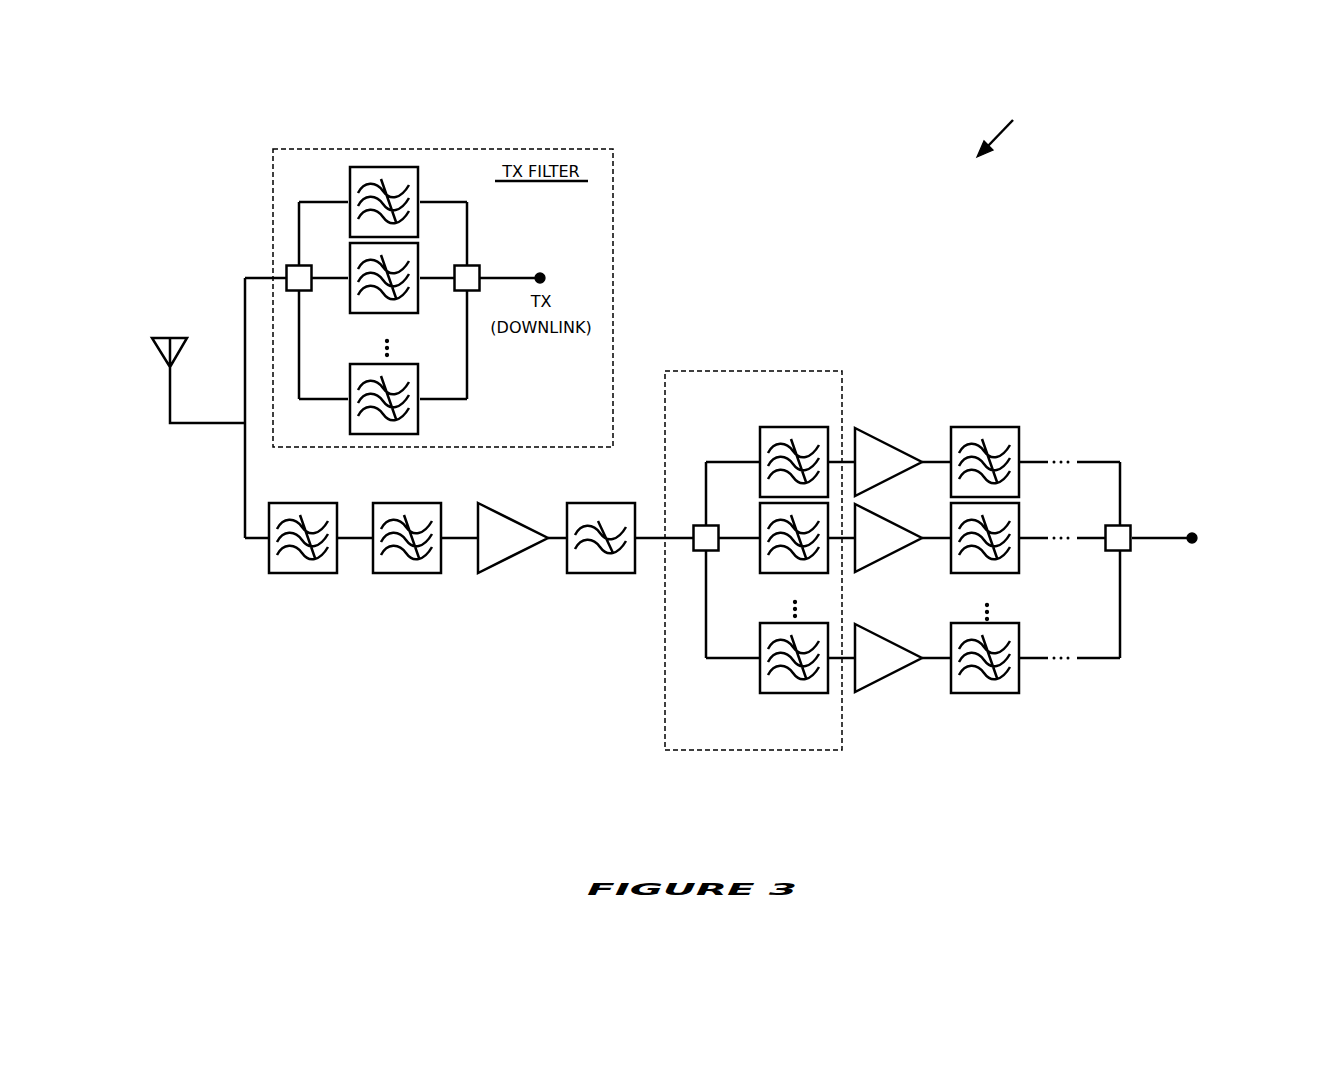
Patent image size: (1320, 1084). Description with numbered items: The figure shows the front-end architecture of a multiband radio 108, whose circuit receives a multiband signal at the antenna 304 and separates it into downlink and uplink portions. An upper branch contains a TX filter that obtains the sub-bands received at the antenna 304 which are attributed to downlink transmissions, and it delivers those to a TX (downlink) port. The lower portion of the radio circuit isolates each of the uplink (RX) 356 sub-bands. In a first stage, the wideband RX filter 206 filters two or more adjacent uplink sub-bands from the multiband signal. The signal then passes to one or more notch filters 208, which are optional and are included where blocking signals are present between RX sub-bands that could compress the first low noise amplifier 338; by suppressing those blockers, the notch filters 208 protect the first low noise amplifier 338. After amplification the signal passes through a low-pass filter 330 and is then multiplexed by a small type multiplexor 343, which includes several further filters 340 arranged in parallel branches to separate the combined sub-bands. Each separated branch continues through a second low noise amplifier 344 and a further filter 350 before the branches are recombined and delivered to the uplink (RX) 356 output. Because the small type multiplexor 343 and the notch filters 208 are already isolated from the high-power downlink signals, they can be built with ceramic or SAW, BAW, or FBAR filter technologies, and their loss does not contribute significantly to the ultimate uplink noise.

The multiband radio 108 is at (1009, 129).
The antenna 304 is at (107, 389).
The wideband RX filter 206 is at (303, 550).
The notch filter 208 is at (407, 550).
The first low noise amplifier (LNA 1) 338 is at (513, 525).
The low-pass filter 330 is at (601, 537).
The filter 340 is at (794, 560).
The small type multiplexor 343 is at (737, 799).
The second low noise amplifier (LNA 2) 344 is at (888, 542).
The filter 350 is at (985, 561).
The uplink (RX) output 356 is at (1245, 574).